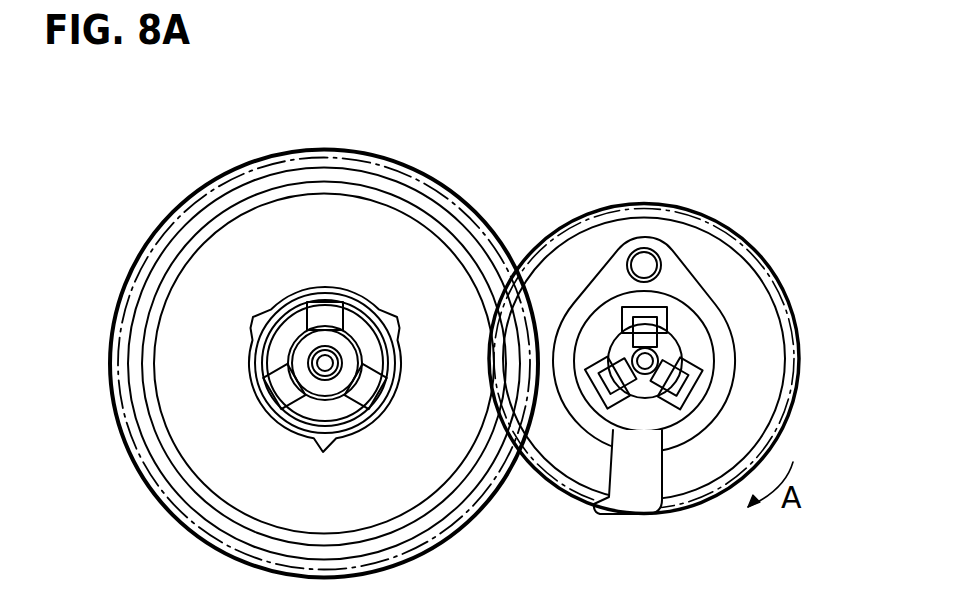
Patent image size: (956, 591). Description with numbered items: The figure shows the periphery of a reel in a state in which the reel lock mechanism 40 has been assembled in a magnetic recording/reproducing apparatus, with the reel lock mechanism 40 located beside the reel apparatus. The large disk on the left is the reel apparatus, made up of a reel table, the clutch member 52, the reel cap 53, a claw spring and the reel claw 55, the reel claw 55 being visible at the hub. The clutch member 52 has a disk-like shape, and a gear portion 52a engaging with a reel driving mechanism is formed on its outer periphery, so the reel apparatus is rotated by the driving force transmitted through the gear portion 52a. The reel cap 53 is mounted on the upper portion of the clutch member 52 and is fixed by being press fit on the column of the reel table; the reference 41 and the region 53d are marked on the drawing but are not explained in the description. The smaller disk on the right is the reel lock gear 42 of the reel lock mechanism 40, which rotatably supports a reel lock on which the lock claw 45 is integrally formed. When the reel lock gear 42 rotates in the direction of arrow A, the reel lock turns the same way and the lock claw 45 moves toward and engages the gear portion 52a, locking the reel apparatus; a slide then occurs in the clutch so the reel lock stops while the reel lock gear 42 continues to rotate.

The reel lock mechanism 40 is at (732, 223).
The first wheel (rim) 41 is at (442, 177).
The reel lock gear 42 is at (758, 383).
The lock claw 45 is at (628, 505).
The clutch member 52 is at (125, 450).
The gear portion 52a is at (333, 158).
The reel cap 53 is at (287, 223).
The disc recess 53d is at (183, 323).
The reel claw 55 is at (292, 322).